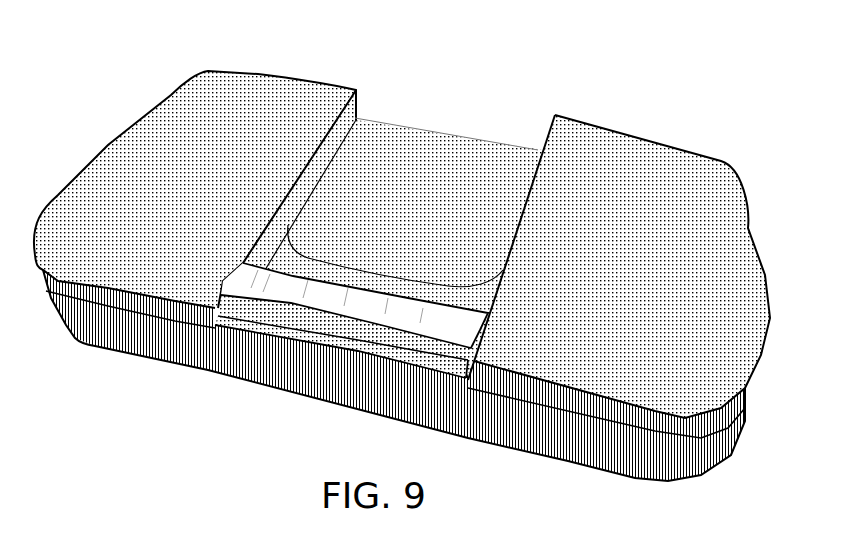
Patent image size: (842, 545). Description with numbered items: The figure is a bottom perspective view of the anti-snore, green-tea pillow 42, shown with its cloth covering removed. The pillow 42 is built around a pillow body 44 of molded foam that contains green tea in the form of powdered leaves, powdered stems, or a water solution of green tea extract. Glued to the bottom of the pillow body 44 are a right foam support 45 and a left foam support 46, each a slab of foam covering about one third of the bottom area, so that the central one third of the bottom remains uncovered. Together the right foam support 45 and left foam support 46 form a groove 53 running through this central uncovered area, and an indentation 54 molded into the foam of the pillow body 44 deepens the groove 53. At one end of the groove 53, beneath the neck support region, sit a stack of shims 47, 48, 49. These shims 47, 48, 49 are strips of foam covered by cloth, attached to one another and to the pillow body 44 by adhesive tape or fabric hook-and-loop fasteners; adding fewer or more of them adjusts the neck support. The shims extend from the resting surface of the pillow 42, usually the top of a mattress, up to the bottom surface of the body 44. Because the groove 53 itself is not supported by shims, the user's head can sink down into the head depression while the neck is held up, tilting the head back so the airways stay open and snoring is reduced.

The anti-snore green-tea pillow 42 is at (398, 254).
The pillow body 44 is at (60, 322).
The right foam support 45 is at (163, 87).
The left foam support 46 is at (590, 112).
The shim 47 is at (307, 330).
The shim 48 is at (360, 328).
The shim 49 is at (421, 325).
The groove 53 is at (385, 247).
The indentation 54 is at (381, 201).